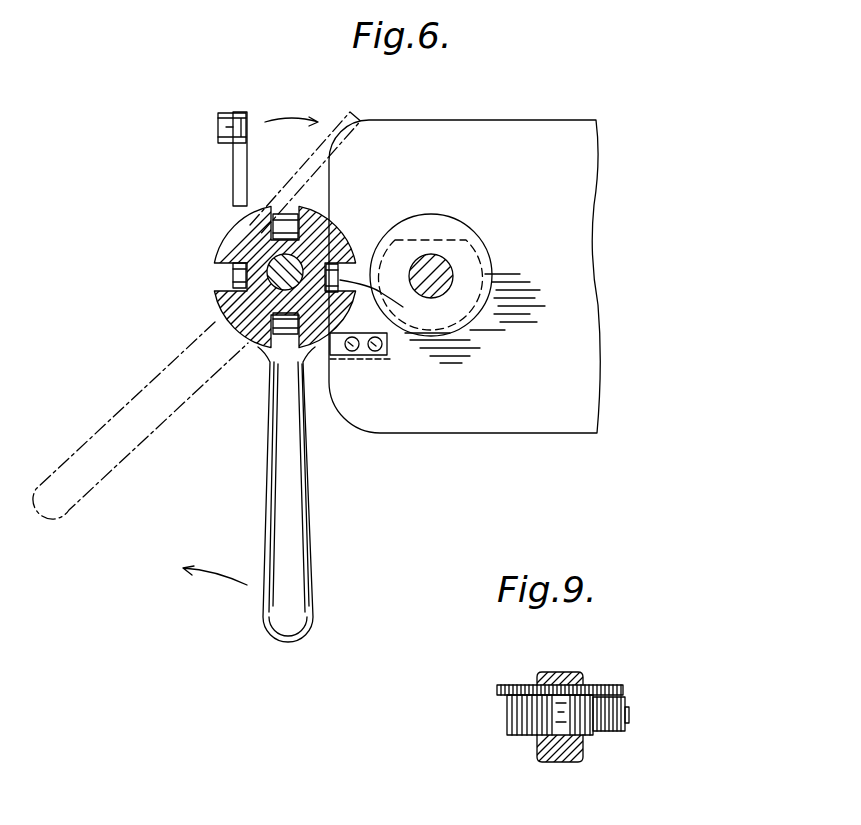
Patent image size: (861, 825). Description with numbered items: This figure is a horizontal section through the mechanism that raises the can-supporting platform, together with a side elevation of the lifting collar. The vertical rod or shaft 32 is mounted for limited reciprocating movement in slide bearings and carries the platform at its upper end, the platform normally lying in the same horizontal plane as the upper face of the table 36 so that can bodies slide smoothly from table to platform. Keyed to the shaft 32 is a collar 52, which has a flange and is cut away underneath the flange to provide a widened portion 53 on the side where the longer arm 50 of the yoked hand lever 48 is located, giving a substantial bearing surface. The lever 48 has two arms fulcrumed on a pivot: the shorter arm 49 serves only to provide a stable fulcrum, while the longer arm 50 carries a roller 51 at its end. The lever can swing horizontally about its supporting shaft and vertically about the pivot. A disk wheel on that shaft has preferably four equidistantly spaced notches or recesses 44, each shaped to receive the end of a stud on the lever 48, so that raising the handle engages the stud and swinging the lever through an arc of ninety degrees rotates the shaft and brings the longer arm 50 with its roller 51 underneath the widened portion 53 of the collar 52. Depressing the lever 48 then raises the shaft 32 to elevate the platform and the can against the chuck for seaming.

In FIG. 6, the rod or shaft 32 is at (449, 277).
In FIG. 9, the rod or shaft 32 is at (541, 745).
In FIG. 6, the table 36 is at (464, 276).
In FIG. 6, the notches or recesses 44 is at (283, 206).
In FIG. 6, the yoked hand lever 48 is at (290, 511).
In FIG. 6, the shorter arm 49 is at (387, 305).
In FIG. 6, the longer arm 50 is at (234, 184).
In FIG. 9, the longer arm 50 is at (598, 731).
In FIG. 6, the roller 51 is at (228, 115).
In FIG. 9, the roller 51 is at (629, 712).
In FIG. 6, the collar 52 is at (463, 327).
In FIG. 9, the collar 52 is at (510, 713).
In FIG. 6, the widened portion of the flange 53 is at (440, 223).
In FIG. 9, the widened portion of the flange 53 is at (621, 687).